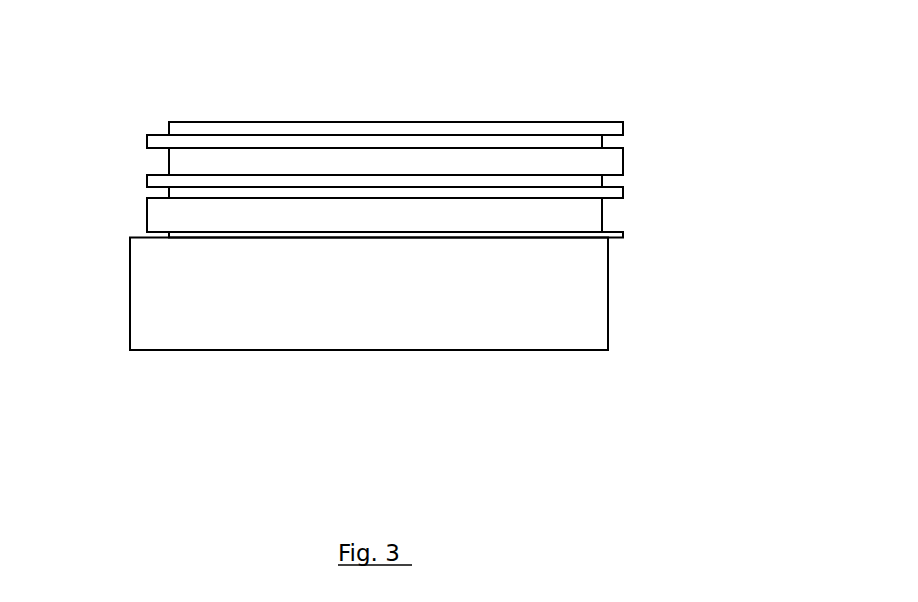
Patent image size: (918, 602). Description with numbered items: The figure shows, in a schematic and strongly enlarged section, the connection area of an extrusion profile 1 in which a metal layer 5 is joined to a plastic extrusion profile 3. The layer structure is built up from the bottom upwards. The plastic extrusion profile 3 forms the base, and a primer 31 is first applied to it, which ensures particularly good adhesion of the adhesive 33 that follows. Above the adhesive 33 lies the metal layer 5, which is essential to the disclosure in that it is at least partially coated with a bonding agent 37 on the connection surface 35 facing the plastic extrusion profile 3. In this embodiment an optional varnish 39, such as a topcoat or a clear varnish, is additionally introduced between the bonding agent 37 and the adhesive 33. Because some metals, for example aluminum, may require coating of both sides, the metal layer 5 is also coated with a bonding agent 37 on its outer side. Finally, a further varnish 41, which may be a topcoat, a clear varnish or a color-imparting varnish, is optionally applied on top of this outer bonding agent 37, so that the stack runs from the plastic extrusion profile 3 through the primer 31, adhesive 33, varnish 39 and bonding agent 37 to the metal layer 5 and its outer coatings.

The extrusion profile 1 is at (694, 85).
The plastic extrusion profile 3 is at (610, 295).
The metal layer 5 is at (624, 160).
The primer 31 is at (200, 236).
The adhesive 33 is at (162, 218).
The connection surface 35 is at (259, 178).
The bonding agent 37 is at (538, 143).
The varnish 39 is at (554, 191).
The varnish 41 is at (611, 122).